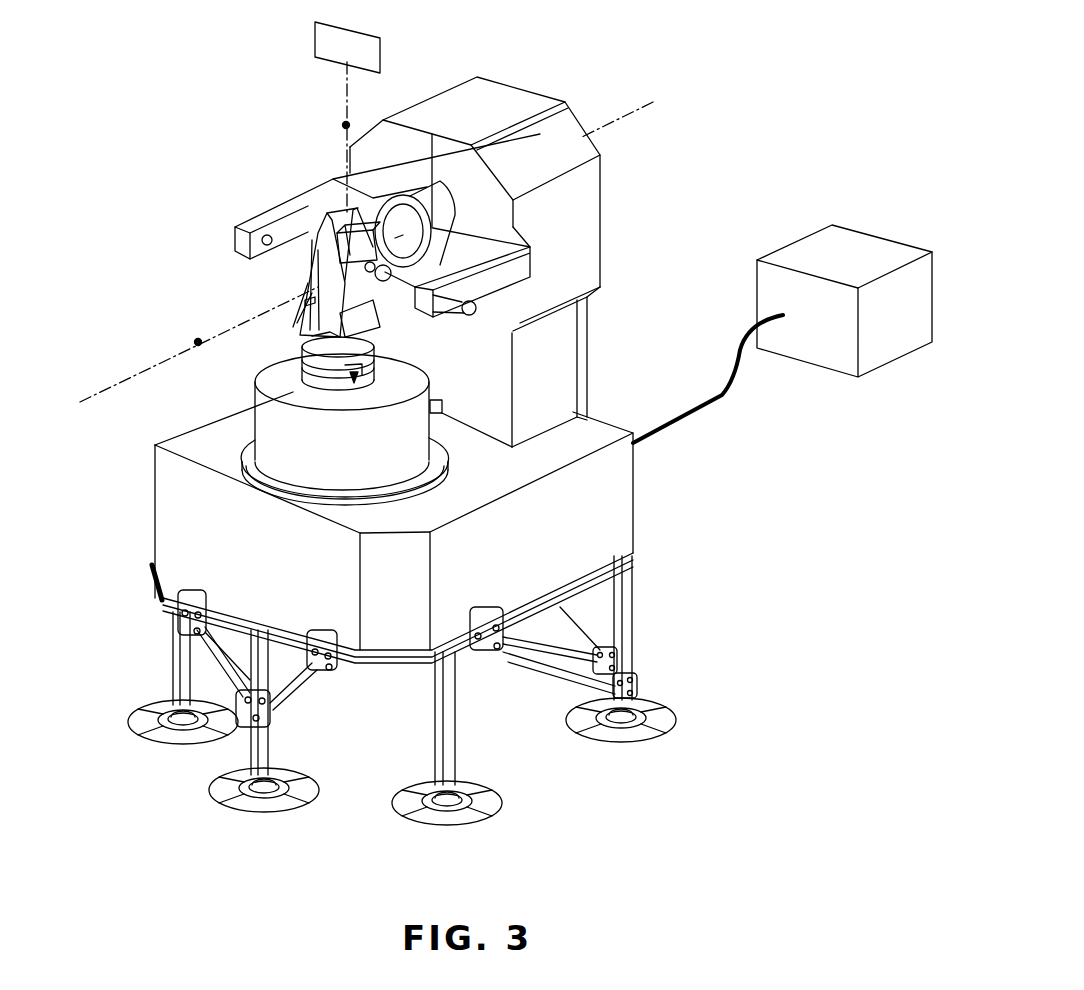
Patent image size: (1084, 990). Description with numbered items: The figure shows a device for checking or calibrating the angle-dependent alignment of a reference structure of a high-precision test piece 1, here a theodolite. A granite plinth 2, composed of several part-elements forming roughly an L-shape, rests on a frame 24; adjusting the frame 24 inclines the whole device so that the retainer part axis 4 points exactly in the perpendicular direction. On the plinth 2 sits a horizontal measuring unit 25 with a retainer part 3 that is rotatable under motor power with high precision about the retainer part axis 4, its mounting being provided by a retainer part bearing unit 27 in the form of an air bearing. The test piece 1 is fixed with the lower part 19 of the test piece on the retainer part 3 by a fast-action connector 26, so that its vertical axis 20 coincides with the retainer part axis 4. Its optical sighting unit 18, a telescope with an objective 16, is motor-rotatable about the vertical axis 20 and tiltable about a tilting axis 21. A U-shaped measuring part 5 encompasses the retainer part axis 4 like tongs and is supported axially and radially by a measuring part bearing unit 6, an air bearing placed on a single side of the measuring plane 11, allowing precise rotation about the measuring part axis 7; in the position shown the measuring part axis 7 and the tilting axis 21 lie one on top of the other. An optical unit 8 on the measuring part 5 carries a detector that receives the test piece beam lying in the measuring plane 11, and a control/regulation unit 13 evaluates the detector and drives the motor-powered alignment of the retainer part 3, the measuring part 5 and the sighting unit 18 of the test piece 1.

The test piece 1 is at (300, 245).
The granite plinth 2 is at (548, 150).
The retainer part 3 is at (308, 353).
The retainer part axis 4 is at (346, 125).
The measuring part 5 is at (477, 233).
The measuring part bearing unit 6 is at (395, 205).
The measuring part axis 7 is at (198, 342).
The optical unit 8 is at (452, 300).
The measuring plane 11 is at (330, 48).
The control/regulation unit 13 is at (835, 248).
The objective 16 is at (382, 270).
The optical sighting unit 18 is at (357, 240).
The lower part of the test piece 19 is at (308, 335).
The vertical axis 20 is at (346, 125).
The tilting axis 21 is at (198, 342).
The frame 24 is at (637, 580).
The horizontal measuring unit 25 is at (243, 427).
The fast-action connector 26 is at (357, 376).
The retainer part bearing unit 27 is at (368, 400).